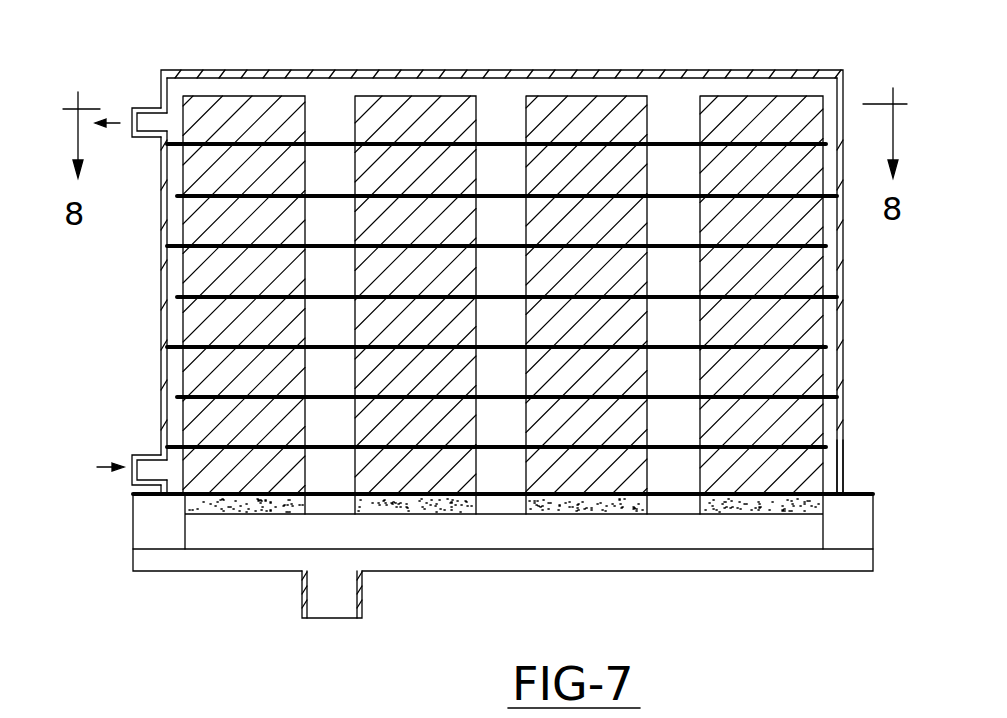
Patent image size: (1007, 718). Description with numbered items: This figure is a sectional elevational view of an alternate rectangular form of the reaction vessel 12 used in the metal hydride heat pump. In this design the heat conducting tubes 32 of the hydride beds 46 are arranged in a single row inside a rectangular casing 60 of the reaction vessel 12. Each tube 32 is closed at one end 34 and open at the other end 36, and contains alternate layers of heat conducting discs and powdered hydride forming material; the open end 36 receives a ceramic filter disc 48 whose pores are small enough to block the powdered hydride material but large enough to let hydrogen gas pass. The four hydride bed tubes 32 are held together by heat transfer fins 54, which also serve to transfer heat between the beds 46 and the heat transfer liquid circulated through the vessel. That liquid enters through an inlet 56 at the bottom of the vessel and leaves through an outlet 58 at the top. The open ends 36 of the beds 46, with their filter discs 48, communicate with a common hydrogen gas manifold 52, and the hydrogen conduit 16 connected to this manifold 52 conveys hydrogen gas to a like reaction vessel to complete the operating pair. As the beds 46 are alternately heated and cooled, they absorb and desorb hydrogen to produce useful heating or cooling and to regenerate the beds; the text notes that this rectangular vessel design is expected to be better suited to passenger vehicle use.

The reaction vessel 12 is at (849, 448).
The conduit 16 is at (365, 603).
The heat conducting tube 32 is at (187, 333).
The closed end 34 is at (738, 96).
The open end 36 is at (458, 515).
The hydride bed 46 is at (400, 120).
The filter disc 48 is at (240, 503).
The hydrogen gas manifold 52 is at (613, 529).
The heat transfer fins 54 is at (793, 297).
The inlet 56 is at (140, 497).
The outlet 58 is at (144, 138).
The rectangular casing 60 is at (843, 463).